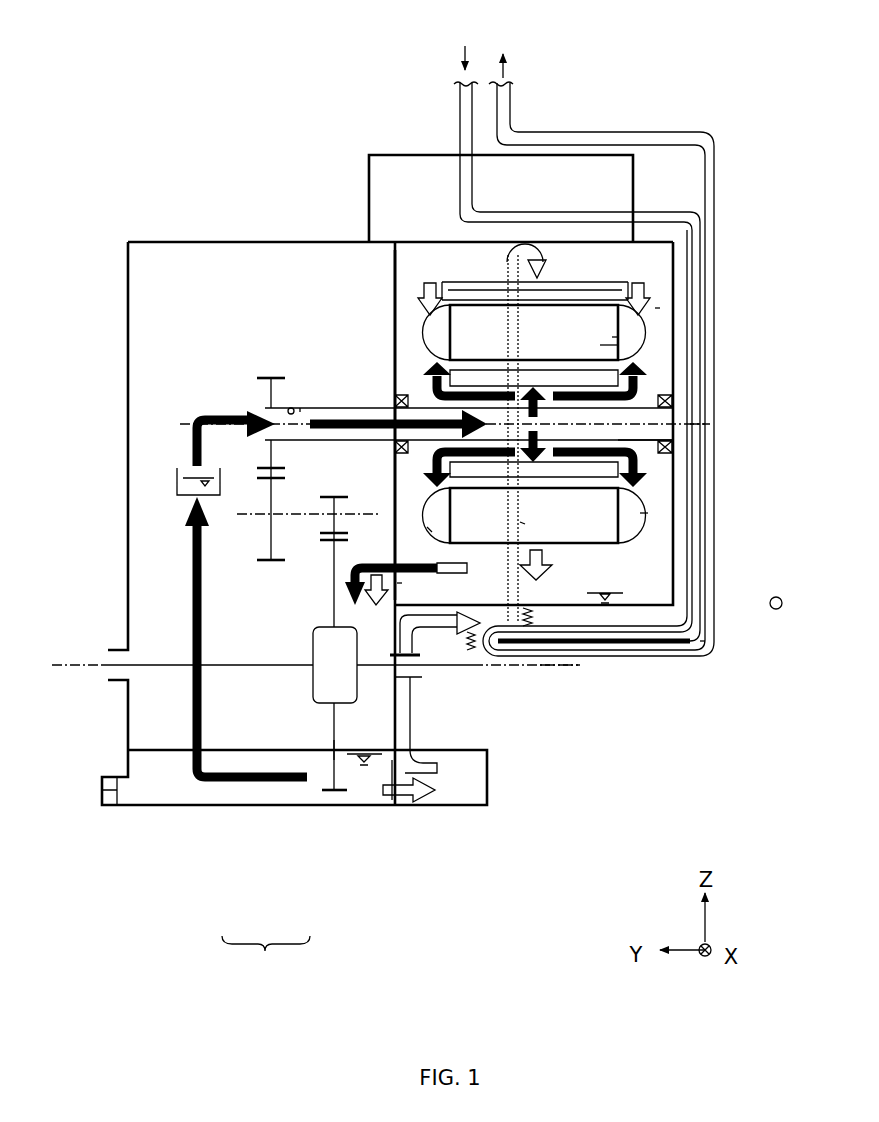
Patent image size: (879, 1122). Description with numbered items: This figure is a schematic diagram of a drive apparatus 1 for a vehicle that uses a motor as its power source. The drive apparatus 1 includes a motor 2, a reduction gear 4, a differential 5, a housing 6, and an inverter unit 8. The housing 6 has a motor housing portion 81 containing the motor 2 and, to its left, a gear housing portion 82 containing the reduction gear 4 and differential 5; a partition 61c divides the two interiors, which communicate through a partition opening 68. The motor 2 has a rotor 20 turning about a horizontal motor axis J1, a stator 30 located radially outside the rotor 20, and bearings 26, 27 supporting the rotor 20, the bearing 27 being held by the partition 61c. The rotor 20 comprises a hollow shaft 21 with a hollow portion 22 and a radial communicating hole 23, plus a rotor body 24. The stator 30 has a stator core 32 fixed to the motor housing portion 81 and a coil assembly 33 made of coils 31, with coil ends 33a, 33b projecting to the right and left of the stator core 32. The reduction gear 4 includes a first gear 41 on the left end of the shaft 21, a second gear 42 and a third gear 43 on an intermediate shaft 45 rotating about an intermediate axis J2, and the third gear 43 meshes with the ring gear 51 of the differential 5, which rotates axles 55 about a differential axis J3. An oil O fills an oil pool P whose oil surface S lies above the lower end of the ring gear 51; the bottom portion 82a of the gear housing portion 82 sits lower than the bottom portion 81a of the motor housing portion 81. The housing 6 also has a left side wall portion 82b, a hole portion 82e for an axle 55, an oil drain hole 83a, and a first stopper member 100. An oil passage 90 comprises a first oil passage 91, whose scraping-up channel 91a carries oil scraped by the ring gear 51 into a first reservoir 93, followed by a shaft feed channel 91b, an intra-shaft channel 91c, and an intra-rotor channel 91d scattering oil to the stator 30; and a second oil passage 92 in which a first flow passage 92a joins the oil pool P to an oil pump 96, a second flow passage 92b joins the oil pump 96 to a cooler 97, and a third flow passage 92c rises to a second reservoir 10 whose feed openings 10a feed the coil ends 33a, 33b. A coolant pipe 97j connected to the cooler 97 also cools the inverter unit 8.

The drive apparatus 1 is at (683, 100).
The motor 2 is at (660, 308).
The reduction gear 4 is at (265, 575).
The differential 5 is at (307, 688).
The housing 6 is at (678, 240).
The inverter unit 8 is at (612, 145).
The second reservoir 10 is at (633, 270).
The feed openings 10a is at (427, 282).
The rotor 20 is at (600, 383).
The shaft 21 is at (300, 408).
The hollow portion 22 is at (292, 410).
The communicating hole 23 is at (640, 457).
The rotor body 24 is at (620, 392).
The bearing 26 is at (672, 400).
The bearing 27 is at (395, 390).
The stator 30 is at (655, 322).
The coils 31 is at (612, 337).
The stator core 32 is at (600, 345).
The coil assembly 33 is at (637, 540).
The coil end 33a is at (648, 513).
The coil end 33b is at (427, 527).
The first gear 41 is at (270, 378).
The second gear 42 is at (270, 565).
The third gear 43 is at (333, 530).
The intermediate shaft 45 is at (298, 512).
The ring gear 51 is at (333, 795).
The axles 55 is at (170, 665).
The partition 61c is at (395, 270).
The partition opening 68 is at (397, 583).
The motor housing portion 81 is at (408, 236).
The bottom portion 81a is at (520, 522).
The gear housing portion 82 is at (252, 240).
The bottom portion 82a is at (222, 805).
The left side wall portion 82b is at (128, 578).
The hole portion 82e is at (120, 650).
The oil drain hole 83a is at (127, 778).
The oil passage 90 is at (266, 958).
The first oil passage 91 is at (200, 738).
The scraping-up channel 91a is at (192, 570).
The shaft feed channel 91b is at (233, 417).
The intra-shaft channel 91c is at (358, 402).
The intra-rotor channel 91d is at (650, 463).
The second oil passage 92 is at (317, 730).
The first flow passage 92a is at (408, 807).
The second flow passage 92b is at (412, 700).
The third flow passage 92c is at (707, 647).
The first reservoir 93 is at (177, 485).
The oil pump 96 is at (490, 803).
The cooler 97 is at (493, 652).
The coolant pipe 97j is at (690, 598).
The first stopper member 100 is at (103, 793).
The motor axis J1 is at (700, 430).
The intermediate axis J2 is at (355, 512).
The differential axis J3 is at (543, 668).
The oil surface S is at (157, 748).
The oil pool P is at (123, 760).
The oil O is at (368, 790).